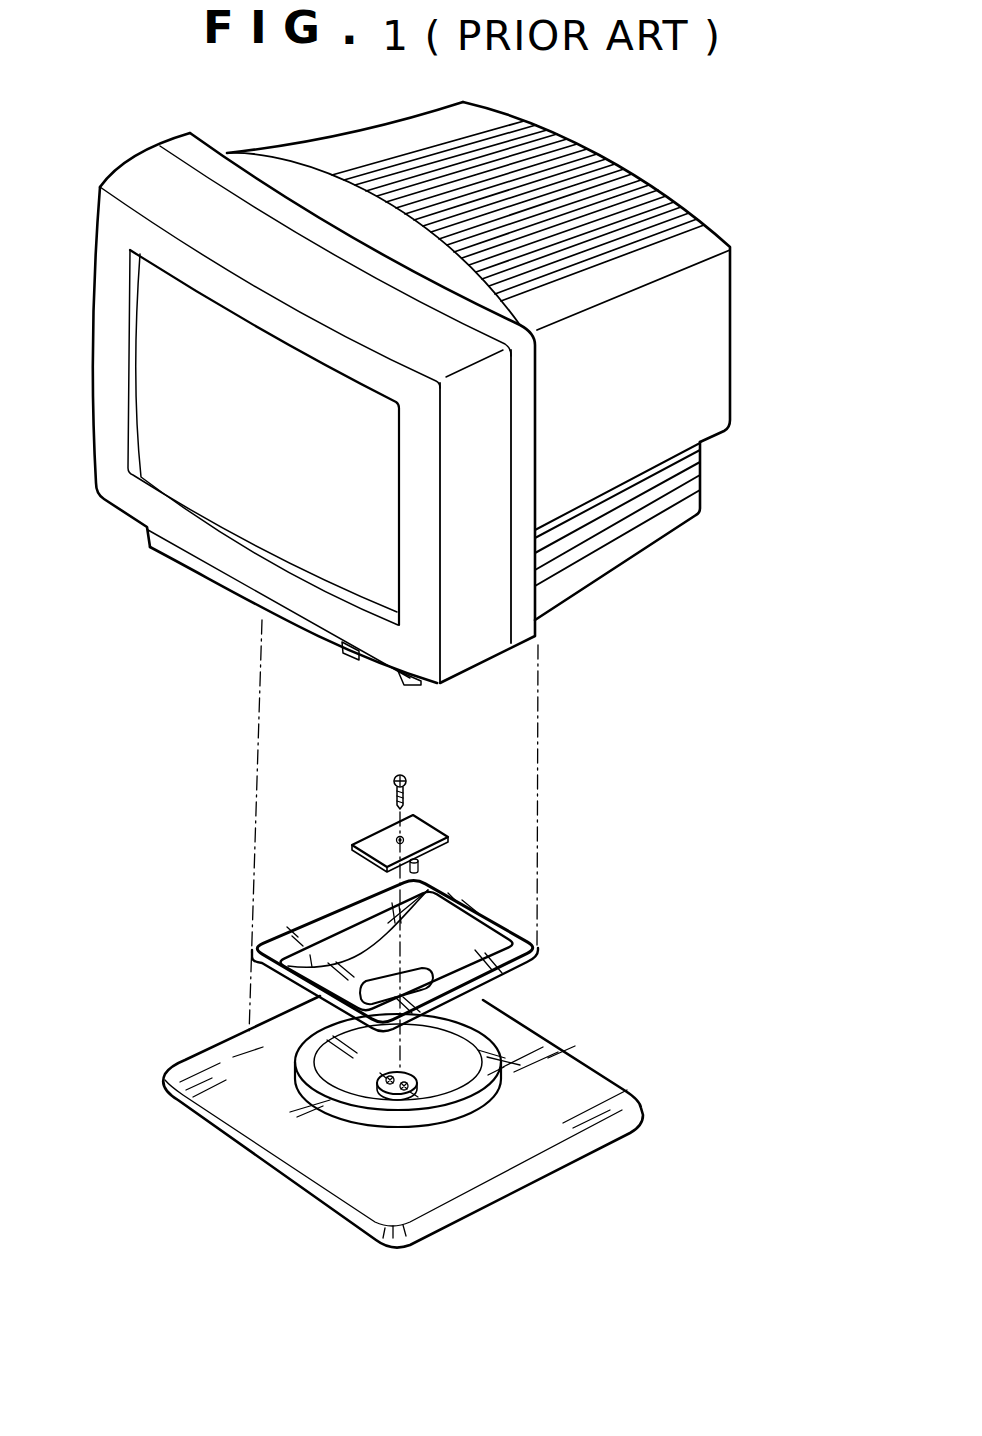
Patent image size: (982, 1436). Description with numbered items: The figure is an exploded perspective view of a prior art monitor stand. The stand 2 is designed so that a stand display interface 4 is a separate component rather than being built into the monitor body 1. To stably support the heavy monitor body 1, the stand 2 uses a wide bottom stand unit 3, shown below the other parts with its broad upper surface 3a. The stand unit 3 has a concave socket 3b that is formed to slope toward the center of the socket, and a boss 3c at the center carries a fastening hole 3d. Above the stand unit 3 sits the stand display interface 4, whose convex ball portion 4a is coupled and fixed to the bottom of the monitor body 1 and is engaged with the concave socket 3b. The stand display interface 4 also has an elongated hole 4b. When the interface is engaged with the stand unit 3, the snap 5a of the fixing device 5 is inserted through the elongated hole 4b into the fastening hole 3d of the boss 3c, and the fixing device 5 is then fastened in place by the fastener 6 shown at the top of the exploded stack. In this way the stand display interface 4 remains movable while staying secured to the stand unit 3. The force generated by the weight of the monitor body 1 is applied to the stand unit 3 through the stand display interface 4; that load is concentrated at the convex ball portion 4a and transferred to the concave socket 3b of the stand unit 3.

The monitor body 1 is at (662, 438).
The stand 2 is at (607, 870).
The stand unit 3 is at (374, 1156).
The top surface of base 3a is at (323, 1175).
The concave socket 3b is at (505, 1058).
The boss 3c is at (435, 1194).
The fastening hole 3d is at (380, 1076).
The stand display interface 4 is at (388, 956).
The convex ball portion 4a is at (477, 1002).
The elongated hole 4b is at (425, 969).
The fixing device 5 is at (439, 830).
The snap 5a is at (419, 867).
The fastener 6 is at (405, 776).